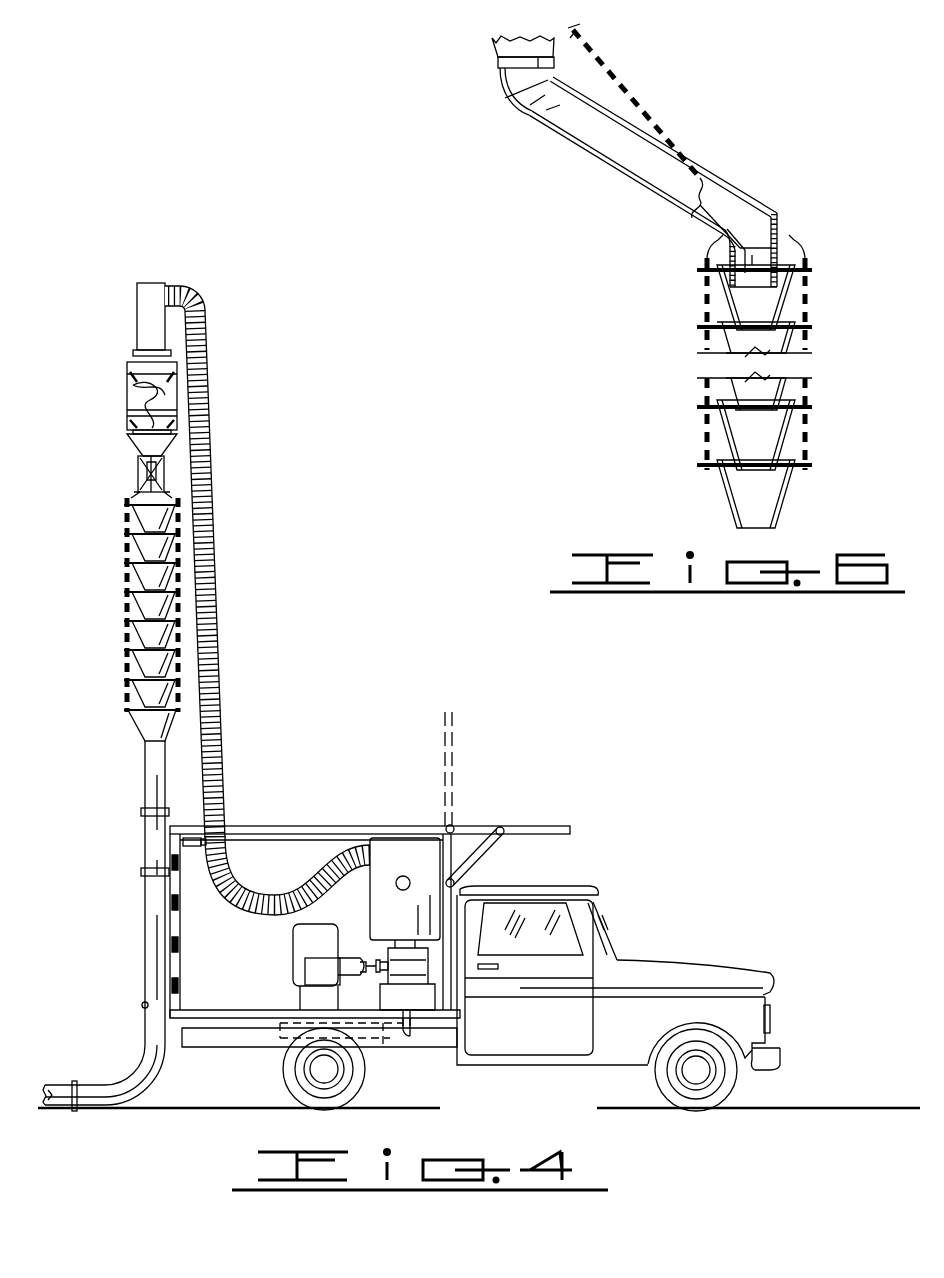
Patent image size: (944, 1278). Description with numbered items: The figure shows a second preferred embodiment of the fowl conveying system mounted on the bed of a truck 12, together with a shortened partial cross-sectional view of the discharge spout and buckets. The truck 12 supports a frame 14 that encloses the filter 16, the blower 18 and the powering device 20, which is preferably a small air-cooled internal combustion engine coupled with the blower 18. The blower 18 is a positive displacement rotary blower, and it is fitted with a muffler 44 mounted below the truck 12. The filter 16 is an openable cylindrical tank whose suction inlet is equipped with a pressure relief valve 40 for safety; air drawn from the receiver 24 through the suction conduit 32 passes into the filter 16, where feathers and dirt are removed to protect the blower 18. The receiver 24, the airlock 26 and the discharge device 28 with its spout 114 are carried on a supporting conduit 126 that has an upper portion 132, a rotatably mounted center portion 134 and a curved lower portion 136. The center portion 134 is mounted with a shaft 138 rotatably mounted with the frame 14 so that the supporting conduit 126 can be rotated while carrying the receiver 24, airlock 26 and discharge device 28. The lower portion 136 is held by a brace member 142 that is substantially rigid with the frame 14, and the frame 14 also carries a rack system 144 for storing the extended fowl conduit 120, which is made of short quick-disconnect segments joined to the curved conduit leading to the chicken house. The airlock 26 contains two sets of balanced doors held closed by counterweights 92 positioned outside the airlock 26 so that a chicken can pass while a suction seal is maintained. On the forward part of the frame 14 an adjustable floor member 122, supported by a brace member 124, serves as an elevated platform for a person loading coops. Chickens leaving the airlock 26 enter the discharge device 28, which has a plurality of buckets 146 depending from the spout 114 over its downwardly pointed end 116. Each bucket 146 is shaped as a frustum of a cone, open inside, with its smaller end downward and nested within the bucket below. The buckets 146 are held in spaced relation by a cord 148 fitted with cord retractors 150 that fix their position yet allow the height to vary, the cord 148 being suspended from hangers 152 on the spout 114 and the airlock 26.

In FIG. 4, the truck 12 is at (780, 990).
In FIG. 4, the frame 14 is at (323, 805).
In FIG. 4, the filter 16 is at (411, 868).
In FIG. 4, the blower 18 is at (390, 975).
In FIG. 4, the powering device 20 is at (293, 942).
In FIG. 4, the receiver 24 is at (152, 282).
In FIG. 4, the airlock 26 is at (108, 430).
In FIG. 4, the discharge device 28 is at (133, 466).
In FIG. 4, the suction conduit 32 is at (265, 902).
In FIG. 4, the pressure relief valve 40 is at (400, 890).
In FIG. 4, the muffler 44 is at (383, 1040).
In FIG. 4, the counterweights 92 is at (133, 390).
In FIG. 6, the spout 114 is at (620, 169).
In FIG. 6, the downwardly pointed end 116 is at (790, 226).
In FIG. 4, the extended fowl conduit 120 is at (53, 1090).
In FIG. 4, the adjustable floor member 122 is at (463, 826).
In FIG. 4, the brace member 124 is at (478, 852).
In FIG. 4, the supporting conduit 126 is at (138, 768).
In FIG. 4, the upper portion 132 is at (150, 791).
In FIG. 4, the center portion 134 is at (150, 838).
In FIG. 4, the curved lower portion 136 is at (150, 945).
In FIG. 4, the shaft 138 is at (197, 845).
In FIG. 4, the brace member 142 is at (141, 1005).
In FIG. 4, the rack system 144 is at (180, 900).
In FIG. 4, the buckets 146 is at (120, 576).
In FIG. 6, the buckets 146 is at (706, 437).
In FIG. 6, the cord 148 is at (705, 297).
In FIG. 6, the cord retractors 150 is at (705, 320).
In FIG. 4, the hangers 152 is at (168, 465).